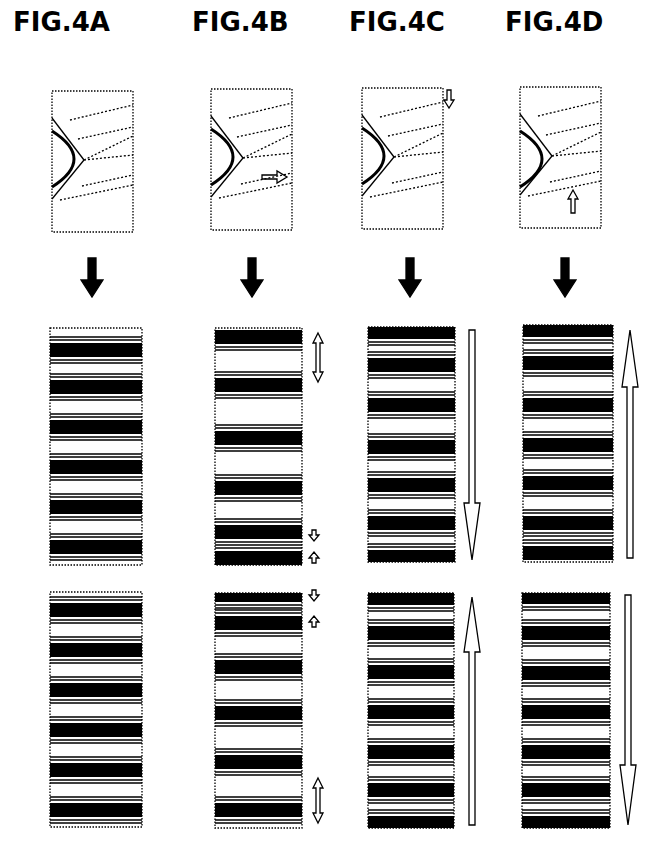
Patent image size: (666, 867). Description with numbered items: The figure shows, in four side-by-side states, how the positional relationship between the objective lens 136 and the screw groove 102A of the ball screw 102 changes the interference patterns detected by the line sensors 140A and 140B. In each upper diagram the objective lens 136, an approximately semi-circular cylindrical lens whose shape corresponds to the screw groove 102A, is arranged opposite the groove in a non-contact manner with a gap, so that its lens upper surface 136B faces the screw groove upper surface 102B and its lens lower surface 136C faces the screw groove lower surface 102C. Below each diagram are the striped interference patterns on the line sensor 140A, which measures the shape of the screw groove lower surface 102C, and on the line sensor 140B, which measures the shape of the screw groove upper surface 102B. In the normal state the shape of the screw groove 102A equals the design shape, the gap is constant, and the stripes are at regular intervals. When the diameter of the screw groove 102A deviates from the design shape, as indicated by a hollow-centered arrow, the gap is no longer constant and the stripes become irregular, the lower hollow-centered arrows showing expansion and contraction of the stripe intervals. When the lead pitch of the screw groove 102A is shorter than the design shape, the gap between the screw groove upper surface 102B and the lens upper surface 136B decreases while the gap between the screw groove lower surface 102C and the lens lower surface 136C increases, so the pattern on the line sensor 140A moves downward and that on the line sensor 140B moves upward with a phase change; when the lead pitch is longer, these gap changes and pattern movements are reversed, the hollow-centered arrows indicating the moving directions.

In FIG. 4A, the ball screw 102 is at (94, 142).
In FIG. 4B, the ball screw 102 is at (251, 140).
In FIG. 4C, the ball screw 102 is at (402, 139).
In FIG. 4D, the ball screw 102 is at (560, 138).
In FIG. 4A, the screw groove 102A is at (129, 137).
In FIG. 4B, the screw groove 102A is at (291, 138).
In FIG. 4C, the screw groove 102A is at (442, 139).
In FIG. 4D, the screw groove 102A is at (602, 140).
In FIG. 4A, the screw groove upper surface 102B is at (105, 131).
In FIG. 4B, the screw groove upper surface 102B is at (264, 129).
In FIG. 4C, the screw groove upper surface 102B is at (415, 128).
In FIG. 4D, the screw groove upper surface 102B is at (573, 127).
In FIG. 4A, the screw groove lower surface 102C is at (107, 178).
In FIG. 4B, the screw groove lower surface 102C is at (266, 176).
In FIG. 4C, the screw groove lower surface 102C is at (417, 175).
In FIG. 4D, the screw groove lower surface 102C is at (575, 174).
In FIG. 4A, the objective lens 136 is at (41, 156).
In FIG. 4B, the objective lens 136 is at (202, 157).
In FIG. 4C, the objective lens 136 is at (354, 156).
In FIG. 4D, the objective lens 136 is at (513, 159).
In FIG. 4A, the lens upper surface 136B is at (92, 129).
In FIG. 4B, the lens upper surface 136B is at (251, 127).
In FIG. 4C, the lens upper surface 136B is at (402, 126).
In FIG. 4D, the lens upper surface 136B is at (560, 125).
In FIG. 4A, the lens lower surface 136C is at (92, 190).
In FIG. 4B, the lens lower surface 136C is at (251, 188).
In FIG. 4C, the lens lower surface 136C is at (402, 187).
In FIG. 4D, the lens lower surface 136C is at (560, 186).
In FIG. 4A, the line sensor 140A is at (99, 329).
In FIG. 4B, the line sensor 140A is at (250, 329).
In FIG. 4C, the line sensor 140A is at (396, 330).
In FIG. 4D, the line sensor 140A is at (556, 329).
In FIG. 4A, the line sensor 140B is at (108, 826).
In FIG. 4B, the line sensor 140B is at (272, 827).
In FIG. 4C, the line sensor 140B is at (430, 826).
In FIG. 4D, the line sensor 140B is at (582, 826).